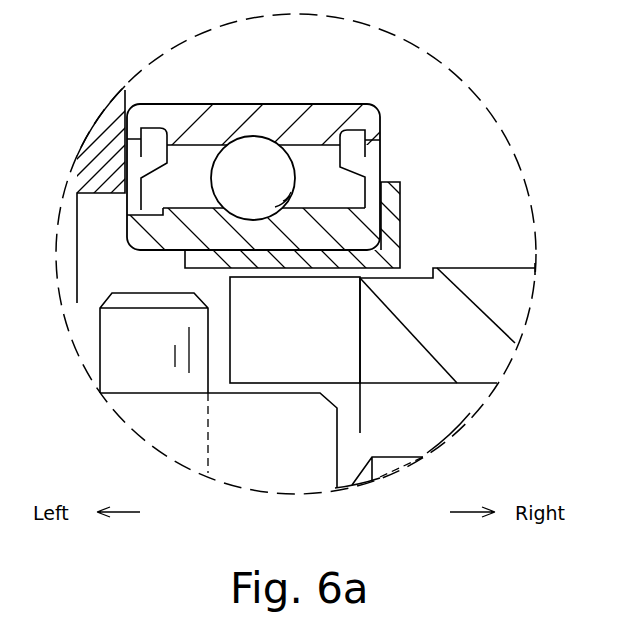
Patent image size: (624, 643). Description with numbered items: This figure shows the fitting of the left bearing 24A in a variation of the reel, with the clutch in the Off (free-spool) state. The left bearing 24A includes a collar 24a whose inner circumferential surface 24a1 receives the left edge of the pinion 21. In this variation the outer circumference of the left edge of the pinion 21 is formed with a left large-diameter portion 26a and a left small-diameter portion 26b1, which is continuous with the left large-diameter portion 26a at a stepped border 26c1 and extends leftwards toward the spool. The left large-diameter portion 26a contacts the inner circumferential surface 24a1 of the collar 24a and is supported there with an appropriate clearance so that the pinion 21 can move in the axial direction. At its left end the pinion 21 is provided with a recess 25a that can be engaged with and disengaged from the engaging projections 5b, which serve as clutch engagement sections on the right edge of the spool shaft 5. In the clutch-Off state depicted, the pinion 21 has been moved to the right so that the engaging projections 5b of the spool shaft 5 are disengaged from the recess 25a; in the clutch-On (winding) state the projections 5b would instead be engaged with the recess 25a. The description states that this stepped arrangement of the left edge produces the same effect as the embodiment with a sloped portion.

The left bearing 24A is at (298, 104).
The collar 24a is at (403, 198).
The inner circumferential surface 24a1 is at (289, 269).
The left large-diameter portion 26a is at (486, 267).
The left small-diameter portion 26b1 is at (385, 278).
The stepped border 26c1 is at (420, 278).
The pinion 21 is at (459, 317).
The recess 25a is at (348, 373).
The spool shaft 5 is at (165, 418).
The engaging projection 5b is at (117, 352).